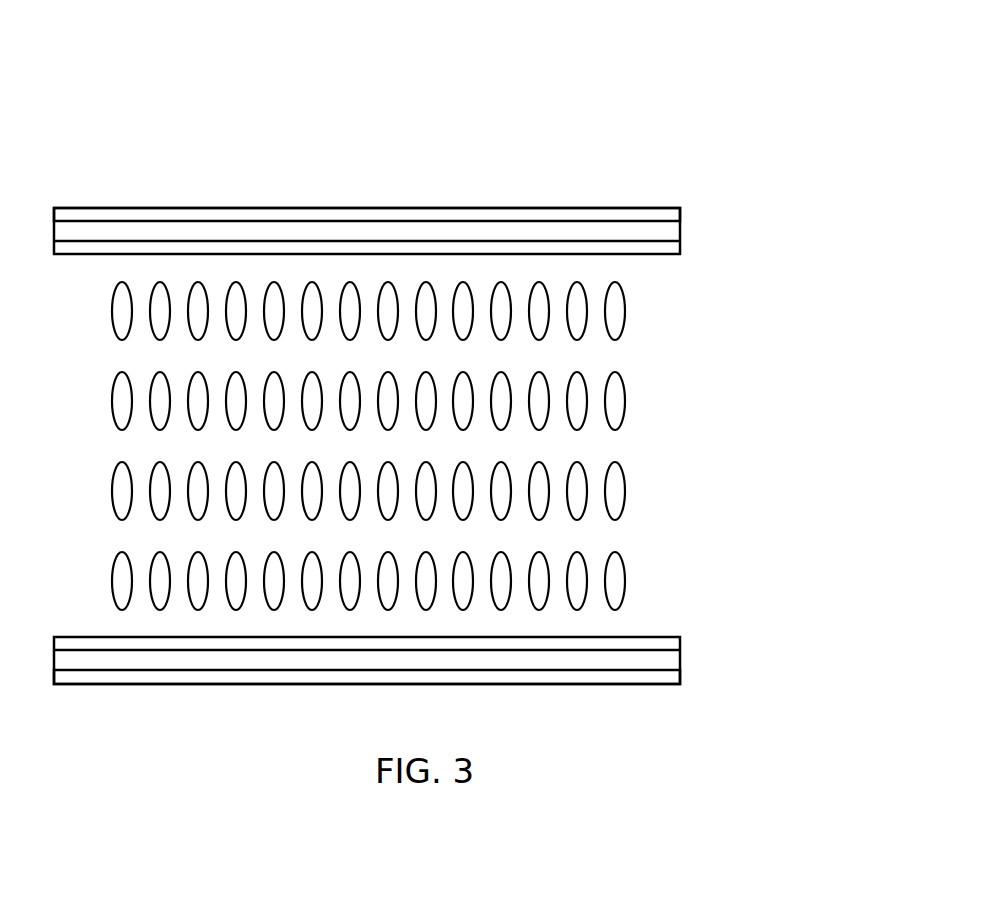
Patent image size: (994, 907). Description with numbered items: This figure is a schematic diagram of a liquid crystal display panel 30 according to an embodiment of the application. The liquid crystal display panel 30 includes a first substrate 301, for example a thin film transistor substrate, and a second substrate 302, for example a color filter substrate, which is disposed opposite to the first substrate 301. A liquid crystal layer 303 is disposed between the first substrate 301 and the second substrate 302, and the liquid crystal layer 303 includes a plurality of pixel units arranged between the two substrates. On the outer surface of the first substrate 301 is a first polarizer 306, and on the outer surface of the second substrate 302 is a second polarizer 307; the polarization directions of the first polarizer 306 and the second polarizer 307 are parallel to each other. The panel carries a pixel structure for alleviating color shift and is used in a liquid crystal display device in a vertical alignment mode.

The liquid crystal display panel 30 is at (559, 124).
The first substrate 301 is at (666, 660).
The second substrate 302 is at (667, 230).
The liquid crystal layer 303 is at (688, 290).
The first polarizer 306 is at (661, 677).
The second polarizer 307 is at (661, 212).